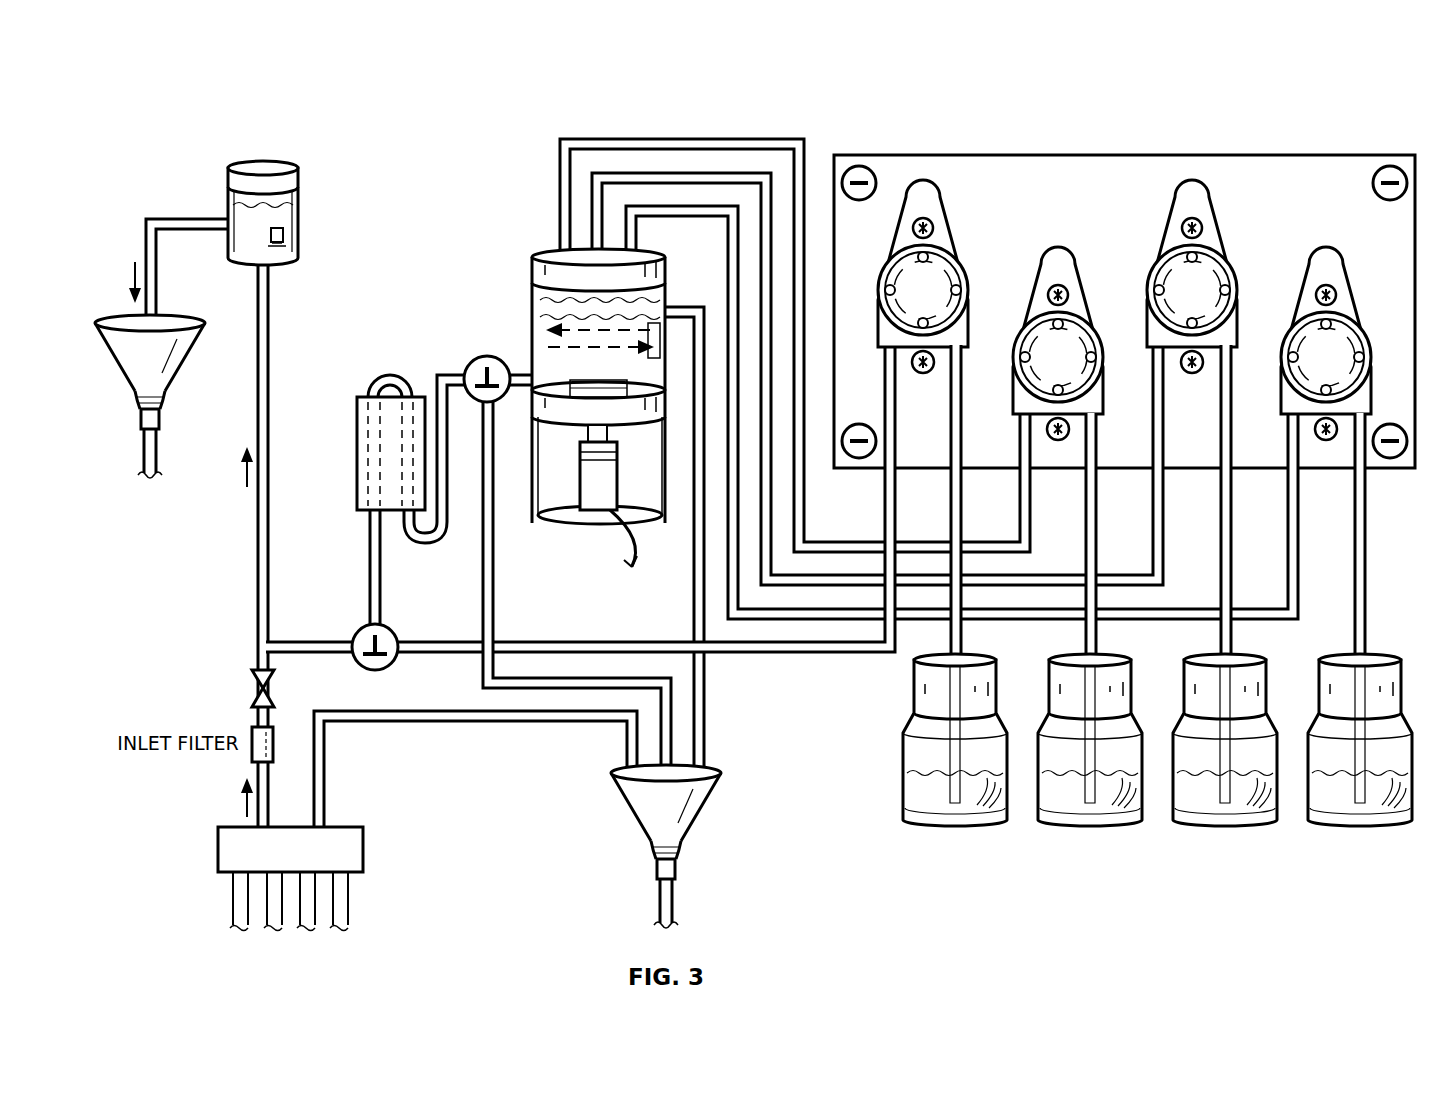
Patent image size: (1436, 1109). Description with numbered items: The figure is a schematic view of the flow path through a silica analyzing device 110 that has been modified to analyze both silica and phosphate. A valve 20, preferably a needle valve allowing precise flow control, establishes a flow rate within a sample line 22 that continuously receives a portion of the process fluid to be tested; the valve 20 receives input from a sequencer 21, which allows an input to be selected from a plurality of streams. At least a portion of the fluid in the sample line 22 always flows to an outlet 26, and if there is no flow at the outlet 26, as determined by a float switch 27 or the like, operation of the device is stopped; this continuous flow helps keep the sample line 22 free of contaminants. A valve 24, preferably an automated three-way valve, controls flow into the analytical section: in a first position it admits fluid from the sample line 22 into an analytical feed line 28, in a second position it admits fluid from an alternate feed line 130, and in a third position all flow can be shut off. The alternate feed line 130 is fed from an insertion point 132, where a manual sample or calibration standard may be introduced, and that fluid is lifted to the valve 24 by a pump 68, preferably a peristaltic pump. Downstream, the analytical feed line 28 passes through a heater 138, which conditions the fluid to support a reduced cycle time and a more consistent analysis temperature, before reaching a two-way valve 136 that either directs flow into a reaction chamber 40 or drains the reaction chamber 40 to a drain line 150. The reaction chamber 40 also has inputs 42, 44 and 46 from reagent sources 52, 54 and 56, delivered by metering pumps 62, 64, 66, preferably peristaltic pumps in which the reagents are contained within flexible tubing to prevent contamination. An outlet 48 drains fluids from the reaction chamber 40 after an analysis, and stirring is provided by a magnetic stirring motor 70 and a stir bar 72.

The valve 20 is at (250, 687).
The sequencer 21 is at (218, 852).
The sample line 22 is at (256, 306).
The valve 24 is at (357, 634).
The outlet 26 is at (145, 240).
The float switch 27 is at (285, 238).
The analytical feed line 28 is at (372, 570).
The reaction chamber 40 is at (541, 250).
The input 42 is at (870, 540).
The input 44 is at (1047, 574).
The input 46 is at (1250, 607).
The outlet 48 is at (684, 307).
The reagent source 52 is at (1083, 824).
The reagent source 54 is at (1218, 824).
The reagent source 56 is at (1353, 824).
The metering pump 62 is at (1078, 318).
The metering pump 64 is at (1213, 251).
The metering pump 66 is at (1348, 318).
The pump 68 is at (943, 251).
The magnetic stirring motor 70 is at (592, 511).
The stir bar 72 is at (618, 399).
The silica analyzing device 110 is at (1133, 118).
The alternate feed line 130 is at (852, 655).
The insertion point 132 is at (948, 824).
The valve 136 is at (468, 365).
The heater 138 is at (355, 459).
The drain line 150 is at (483, 581).